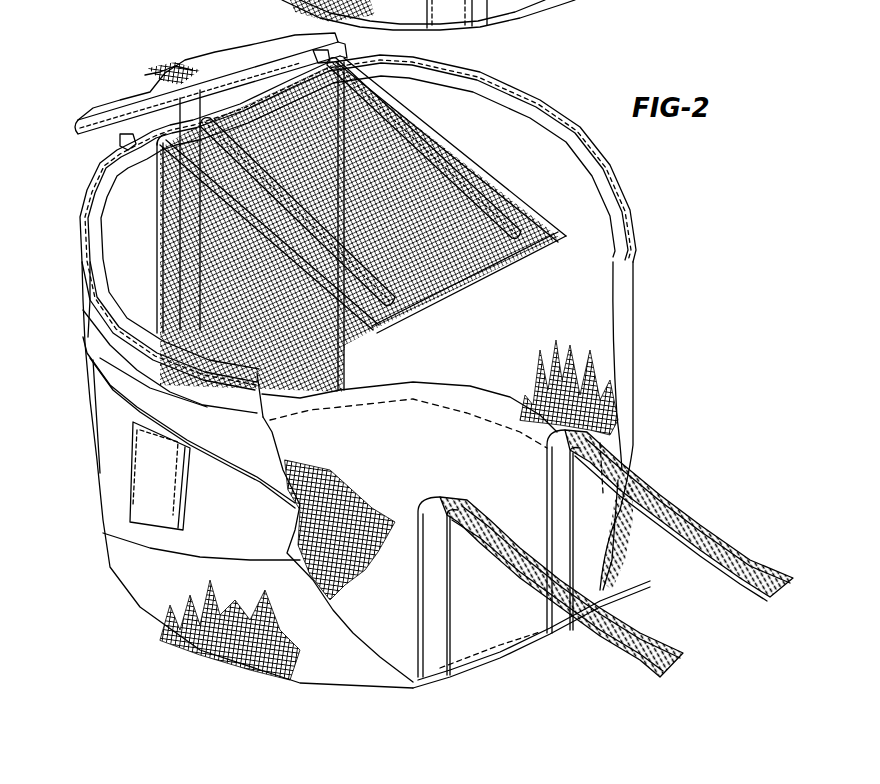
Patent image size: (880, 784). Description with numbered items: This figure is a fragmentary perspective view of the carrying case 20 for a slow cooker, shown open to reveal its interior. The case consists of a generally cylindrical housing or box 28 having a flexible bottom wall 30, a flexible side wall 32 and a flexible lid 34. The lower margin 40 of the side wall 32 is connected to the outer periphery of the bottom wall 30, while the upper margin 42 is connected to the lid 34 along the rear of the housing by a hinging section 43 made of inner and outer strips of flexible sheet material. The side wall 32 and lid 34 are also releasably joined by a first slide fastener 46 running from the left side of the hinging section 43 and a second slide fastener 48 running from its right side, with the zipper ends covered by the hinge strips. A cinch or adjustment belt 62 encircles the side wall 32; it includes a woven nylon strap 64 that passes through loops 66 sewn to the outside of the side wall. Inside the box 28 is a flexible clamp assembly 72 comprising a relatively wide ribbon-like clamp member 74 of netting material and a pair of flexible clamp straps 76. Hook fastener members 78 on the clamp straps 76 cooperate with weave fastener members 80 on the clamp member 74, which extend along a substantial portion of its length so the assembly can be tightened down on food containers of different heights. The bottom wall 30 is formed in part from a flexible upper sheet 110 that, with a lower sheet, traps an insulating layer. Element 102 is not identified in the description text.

The carrying case 20 is at (68, 140).
The housing or box 28 is at (640, 300).
The bottom wall 30 is at (362, 623).
The side wall 32 is at (105, 483).
The lid 34 is at (121, 88).
The lower margin 40 is at (145, 594).
The upper margin 42 is at (82, 294).
The hinging section 43 is at (187, 103).
The first slide fastener or zipper 46 is at (87, 160).
The second slide fastener or zipper 48 is at (617, 170).
The cinch or adjustment belt 62 is at (95, 398).
The strap 64 is at (230, 530).
The loops 66 is at (107, 525).
The flexible clamp assembly 72 is at (490, 148).
The clamp member 74 is at (462, 286).
The flexible clamp straps 76 is at (556, 462).
The hook fastener members 78 is at (635, 628).
The weave fastener members 80 is at (530, 250).
The base container 102 is at (518, 8).
The upper sheet 110 is at (350, 456).